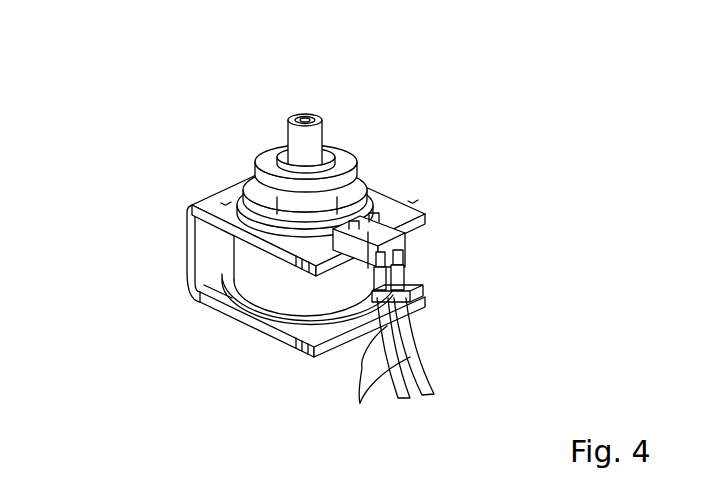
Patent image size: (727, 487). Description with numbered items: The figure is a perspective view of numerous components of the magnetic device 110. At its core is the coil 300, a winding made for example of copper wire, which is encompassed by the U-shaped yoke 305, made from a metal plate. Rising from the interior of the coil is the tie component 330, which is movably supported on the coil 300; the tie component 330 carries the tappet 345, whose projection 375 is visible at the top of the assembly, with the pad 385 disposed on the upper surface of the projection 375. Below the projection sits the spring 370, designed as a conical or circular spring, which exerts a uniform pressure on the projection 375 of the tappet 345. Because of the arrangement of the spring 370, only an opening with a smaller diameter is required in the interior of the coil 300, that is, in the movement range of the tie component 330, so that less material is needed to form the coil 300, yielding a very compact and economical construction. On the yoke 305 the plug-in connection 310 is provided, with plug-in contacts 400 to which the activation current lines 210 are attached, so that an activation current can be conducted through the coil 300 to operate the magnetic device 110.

The magnetic device 110 is at (340, 106).
The activation current lines 210 is at (385, 376).
The coil 300 is at (267, 273).
The U-shaped yoke 305 is at (224, 212).
The plug-in connection 310 is at (423, 219).
The tie component 330 is at (294, 107).
The tappet 345 is at (315, 150).
The spring 370 is at (370, 197).
The projection 375 is at (343, 177).
The pad 385 is at (332, 160).
The plug-in contacts 400 is at (415, 265).